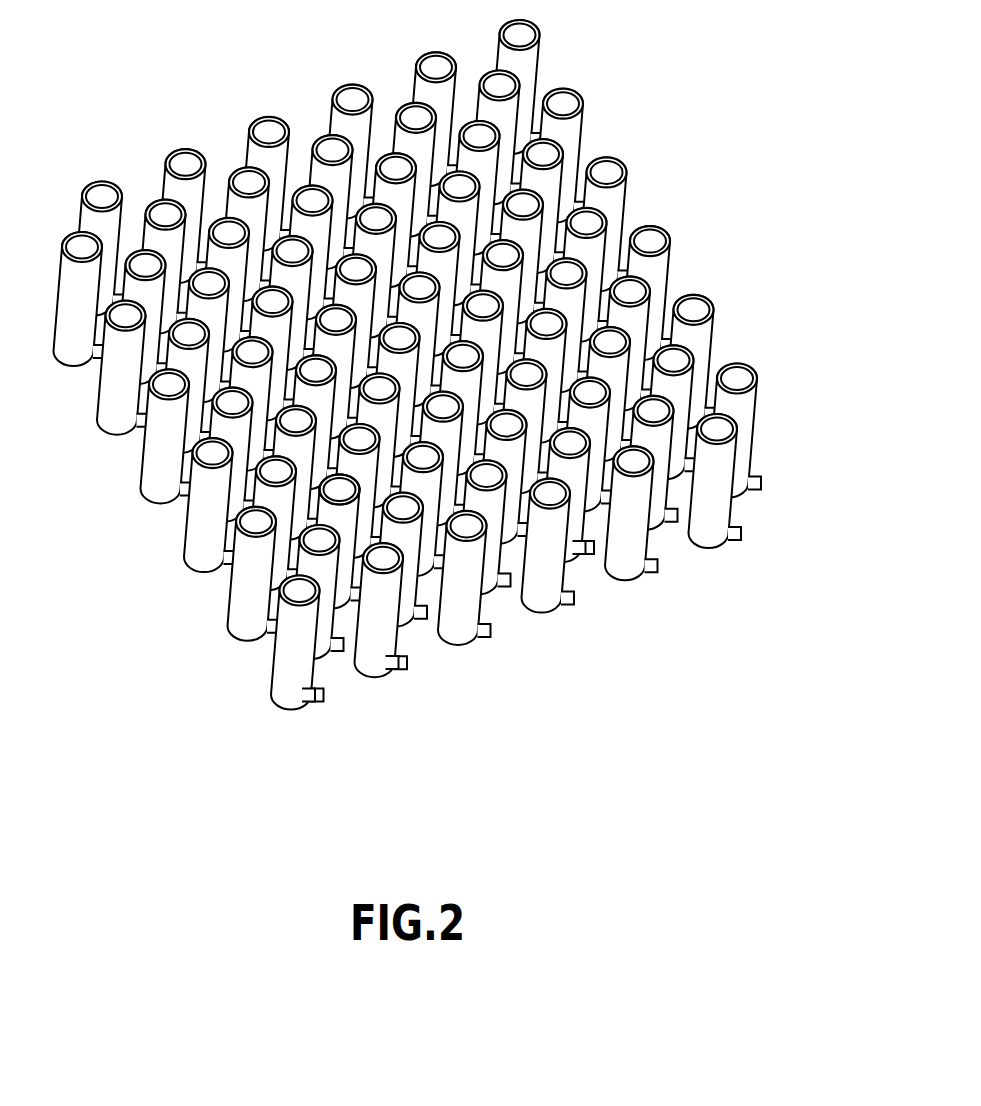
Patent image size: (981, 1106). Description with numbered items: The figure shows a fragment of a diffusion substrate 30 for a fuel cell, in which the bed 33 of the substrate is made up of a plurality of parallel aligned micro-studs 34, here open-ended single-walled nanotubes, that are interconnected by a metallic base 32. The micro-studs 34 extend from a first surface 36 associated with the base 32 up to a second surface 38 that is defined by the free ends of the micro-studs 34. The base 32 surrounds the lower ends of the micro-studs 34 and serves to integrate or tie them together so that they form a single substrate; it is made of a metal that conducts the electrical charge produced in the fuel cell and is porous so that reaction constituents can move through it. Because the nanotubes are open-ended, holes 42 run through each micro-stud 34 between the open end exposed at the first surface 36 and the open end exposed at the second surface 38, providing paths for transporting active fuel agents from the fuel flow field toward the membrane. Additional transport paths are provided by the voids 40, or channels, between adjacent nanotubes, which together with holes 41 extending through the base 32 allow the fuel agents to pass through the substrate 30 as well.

The diffusion substrate 30 is at (458, 423).
The base 32 is at (603, 555).
The bed 33 is at (52, 180).
The micro-studs 34 is at (717, 463).
The first surface 36 is at (587, 537).
The second surface 38 is at (458, 384).
The voids 40 is at (310, 500).
The holes 41 is at (345, 608).
The holes 42 is at (735, 377).